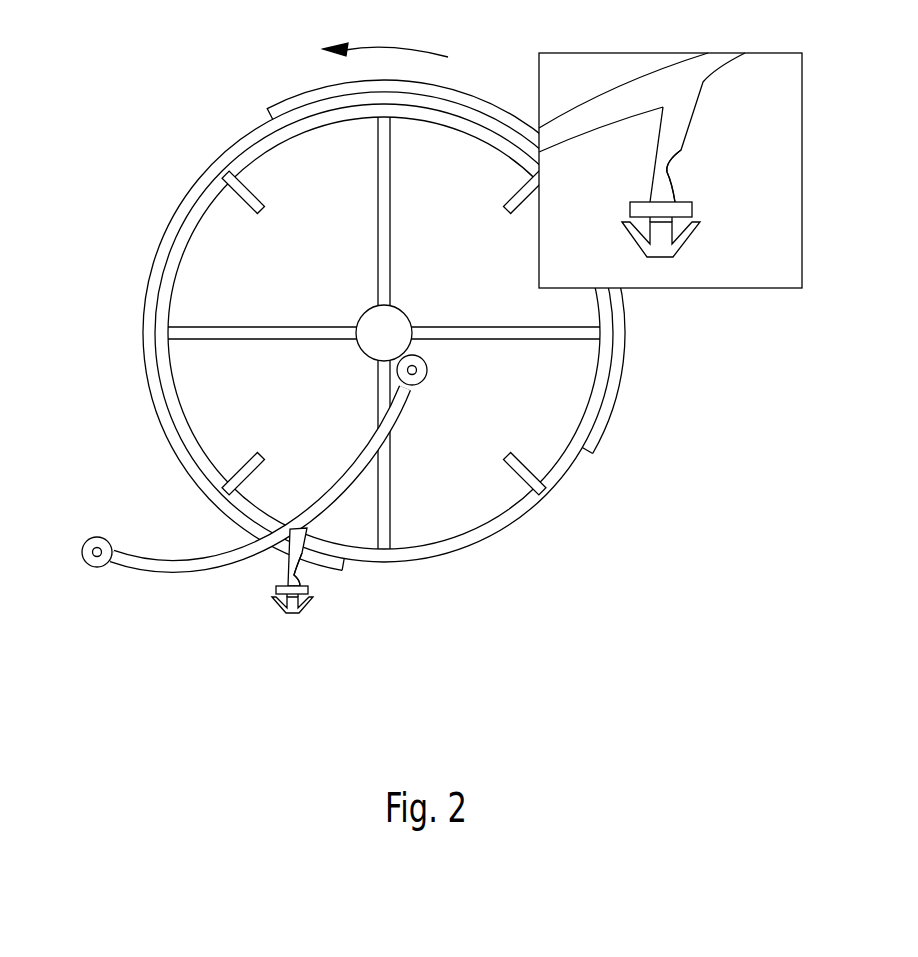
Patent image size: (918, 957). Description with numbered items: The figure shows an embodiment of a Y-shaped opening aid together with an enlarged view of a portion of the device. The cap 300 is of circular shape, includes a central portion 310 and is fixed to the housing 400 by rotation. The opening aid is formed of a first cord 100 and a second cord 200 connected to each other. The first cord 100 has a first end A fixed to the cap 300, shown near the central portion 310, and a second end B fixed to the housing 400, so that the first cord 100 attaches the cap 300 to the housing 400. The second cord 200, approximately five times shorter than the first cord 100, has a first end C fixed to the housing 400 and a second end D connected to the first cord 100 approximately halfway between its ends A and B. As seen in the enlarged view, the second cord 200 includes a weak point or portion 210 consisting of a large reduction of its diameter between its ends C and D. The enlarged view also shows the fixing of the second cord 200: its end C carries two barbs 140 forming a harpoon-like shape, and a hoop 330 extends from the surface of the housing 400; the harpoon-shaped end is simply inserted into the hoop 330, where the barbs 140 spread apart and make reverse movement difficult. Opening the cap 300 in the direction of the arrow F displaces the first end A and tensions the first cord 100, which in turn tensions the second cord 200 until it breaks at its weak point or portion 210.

The first cord 100 is at (182, 552).
The second cord 200 is at (290, 562).
The weak point or portion 210 is at (665, 177).
The hoop 330 is at (682, 210).
The barbs 140 is at (688, 248).
The cap 300 is at (289, 275).
The central portion 310 is at (388, 330).
The housing 400 is at (82, 267).
The first end of the first cord A is at (428, 369).
The second end of the first cord B is at (95, 560).
The first end of the second cord C is at (664, 262).
The second end of the second cord D is at (300, 532).
The arrow (opening direction) F is at (385, 32).